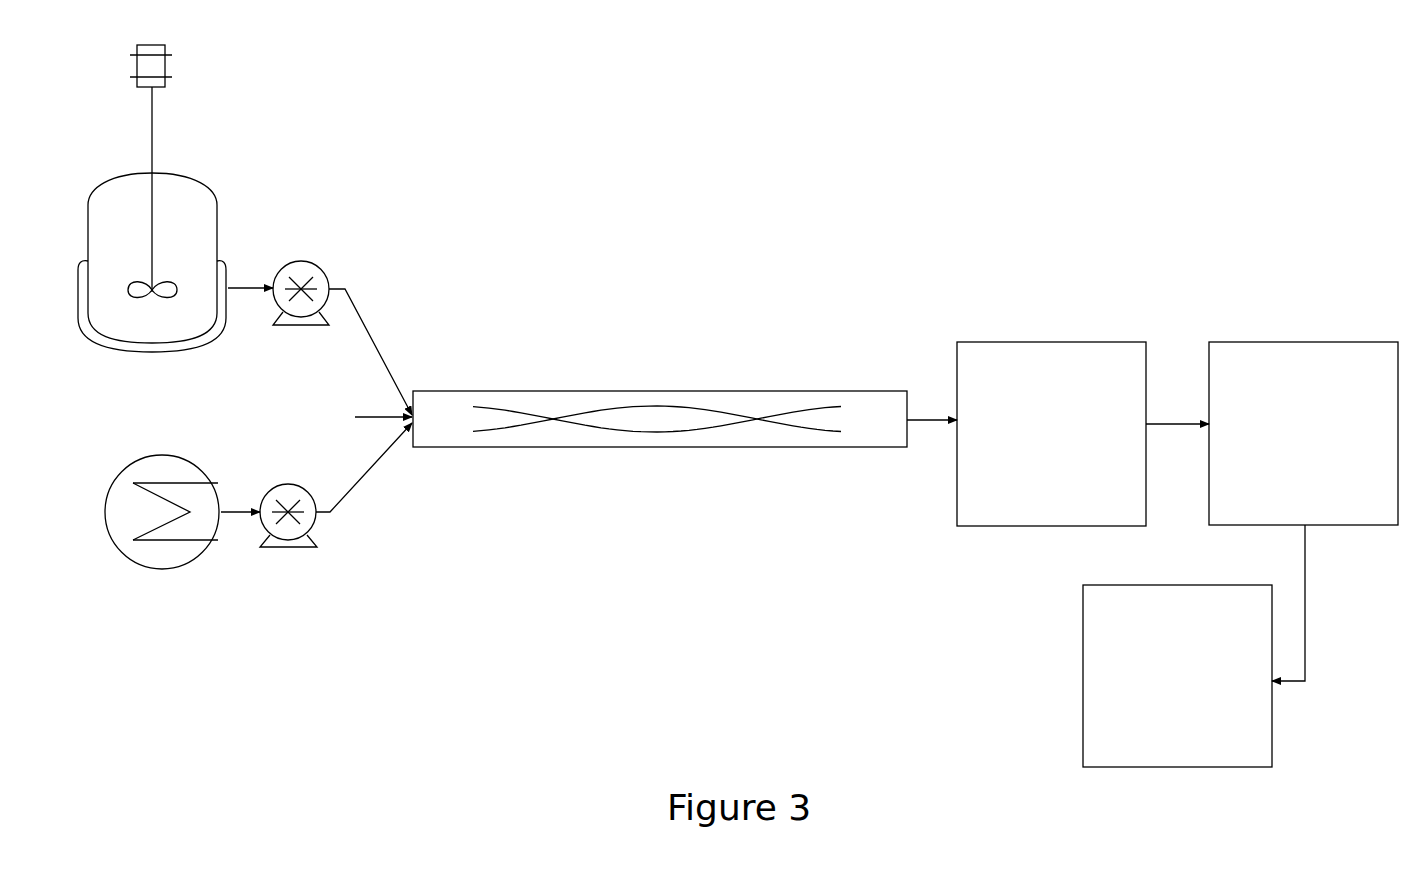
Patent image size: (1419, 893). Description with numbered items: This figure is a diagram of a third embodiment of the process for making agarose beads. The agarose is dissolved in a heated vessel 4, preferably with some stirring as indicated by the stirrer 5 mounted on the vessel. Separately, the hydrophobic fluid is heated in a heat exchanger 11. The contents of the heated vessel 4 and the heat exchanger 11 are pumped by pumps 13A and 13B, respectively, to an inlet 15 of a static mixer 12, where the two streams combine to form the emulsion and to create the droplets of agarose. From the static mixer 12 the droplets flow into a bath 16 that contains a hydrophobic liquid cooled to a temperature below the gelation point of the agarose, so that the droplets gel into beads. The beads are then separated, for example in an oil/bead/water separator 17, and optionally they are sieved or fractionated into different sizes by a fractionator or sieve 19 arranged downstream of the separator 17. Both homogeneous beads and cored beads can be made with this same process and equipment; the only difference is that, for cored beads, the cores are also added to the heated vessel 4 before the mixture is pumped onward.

The heated vessel 4 is at (197, 185).
The stirrer 5 is at (166, 63).
The heat exchanger 11 is at (170, 555).
The static mixer 12 is at (528, 390).
The pump 13A is at (325, 272).
The pump 13B is at (287, 537).
The inlet 15 is at (357, 418).
The bath 16 is at (1022, 362).
The oil/bead/water separator 17 is at (1262, 358).
The fractionator or sieve 19 is at (1098, 682).